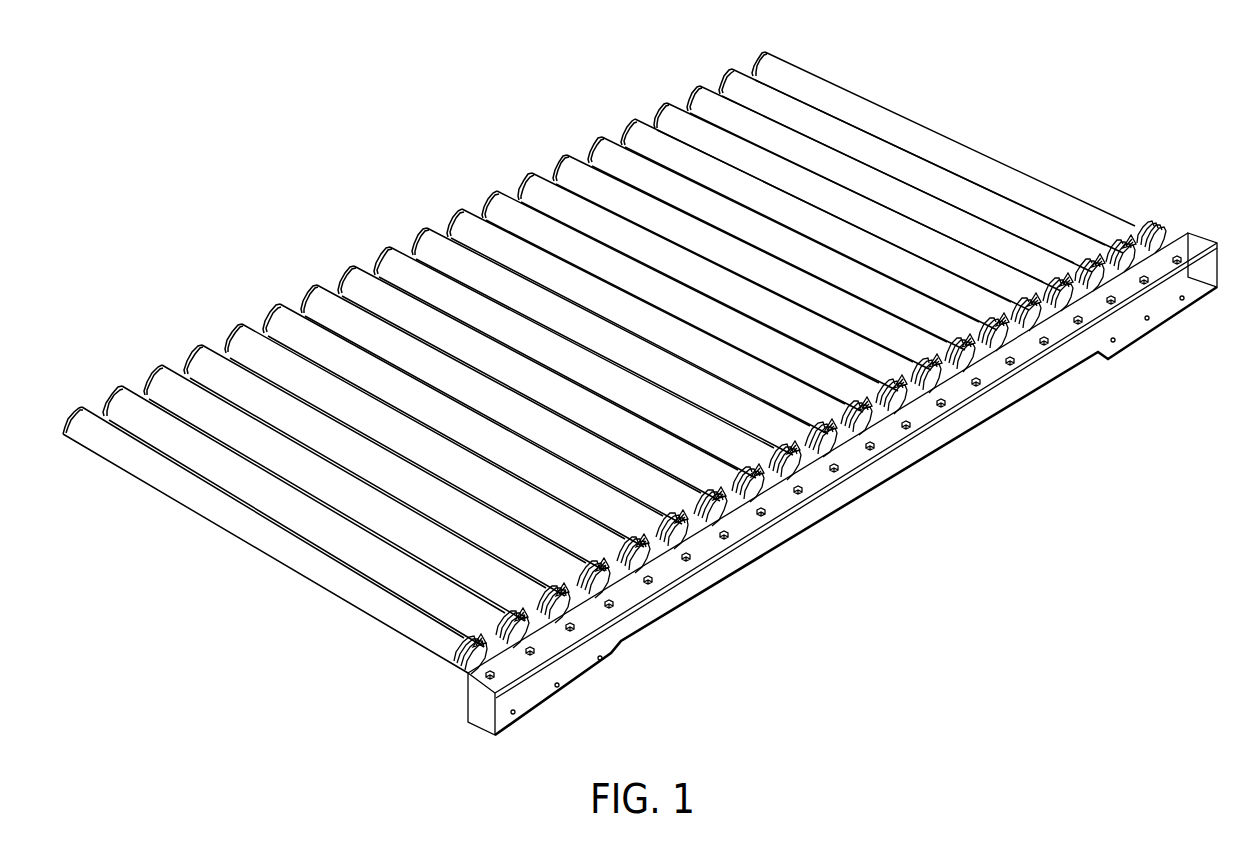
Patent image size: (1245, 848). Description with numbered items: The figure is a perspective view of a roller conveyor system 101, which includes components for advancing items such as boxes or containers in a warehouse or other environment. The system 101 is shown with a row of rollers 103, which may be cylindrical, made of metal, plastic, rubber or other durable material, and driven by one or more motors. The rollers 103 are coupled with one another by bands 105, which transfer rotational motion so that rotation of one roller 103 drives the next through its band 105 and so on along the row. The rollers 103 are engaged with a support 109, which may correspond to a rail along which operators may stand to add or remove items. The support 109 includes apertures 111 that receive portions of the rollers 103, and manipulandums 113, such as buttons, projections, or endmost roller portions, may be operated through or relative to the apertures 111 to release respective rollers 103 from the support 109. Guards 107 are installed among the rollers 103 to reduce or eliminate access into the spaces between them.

The roller conveyor system 101 is at (349, 102).
The rollers 103 is at (313, 575).
The bands 105 is at (435, 662).
The guards 107 is at (437, 638).
The support 109 is at (689, 600).
The apertures 111 is at (495, 686).
The manipulandums 113 is at (498, 678).